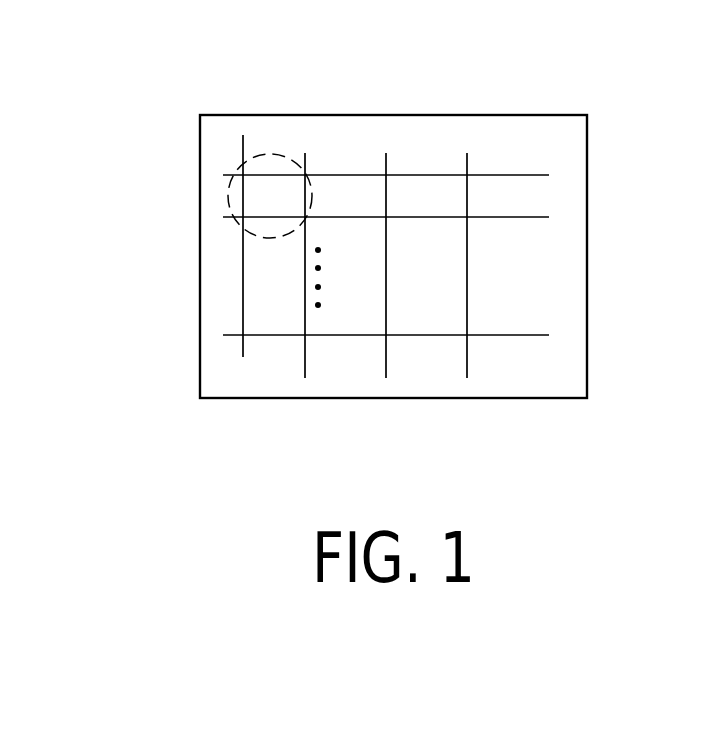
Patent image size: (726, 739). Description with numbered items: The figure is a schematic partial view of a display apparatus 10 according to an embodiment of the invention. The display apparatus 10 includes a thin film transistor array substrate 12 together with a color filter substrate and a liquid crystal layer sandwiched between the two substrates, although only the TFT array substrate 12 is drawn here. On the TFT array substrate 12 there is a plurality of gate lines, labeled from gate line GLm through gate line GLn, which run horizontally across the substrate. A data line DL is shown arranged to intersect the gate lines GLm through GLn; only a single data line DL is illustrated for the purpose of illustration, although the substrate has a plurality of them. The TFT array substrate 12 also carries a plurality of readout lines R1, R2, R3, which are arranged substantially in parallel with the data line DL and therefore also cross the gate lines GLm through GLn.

The display apparatus 10 is at (400, 57).
The thin film transistor array substrate 12 is at (538, 115).
The data line DL is at (248, 221).
The gate line GLm is at (333, 177).
The gate line GLn is at (333, 337).
The readout line R1 is at (304, 297).
The readout line R2 is at (386, 297).
The readout line R3 is at (467, 297).